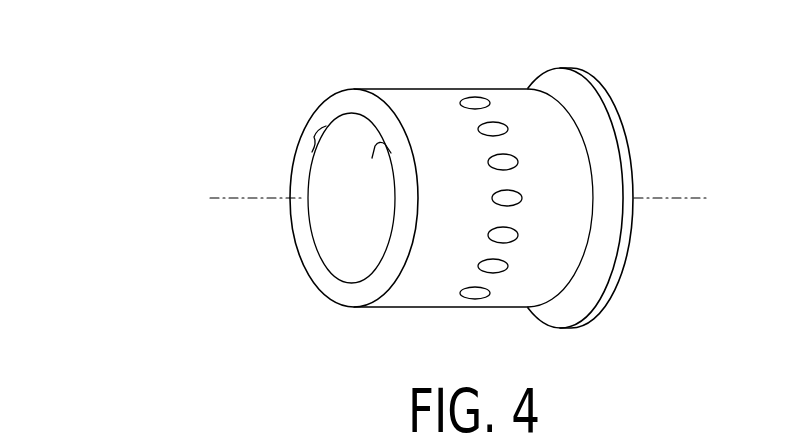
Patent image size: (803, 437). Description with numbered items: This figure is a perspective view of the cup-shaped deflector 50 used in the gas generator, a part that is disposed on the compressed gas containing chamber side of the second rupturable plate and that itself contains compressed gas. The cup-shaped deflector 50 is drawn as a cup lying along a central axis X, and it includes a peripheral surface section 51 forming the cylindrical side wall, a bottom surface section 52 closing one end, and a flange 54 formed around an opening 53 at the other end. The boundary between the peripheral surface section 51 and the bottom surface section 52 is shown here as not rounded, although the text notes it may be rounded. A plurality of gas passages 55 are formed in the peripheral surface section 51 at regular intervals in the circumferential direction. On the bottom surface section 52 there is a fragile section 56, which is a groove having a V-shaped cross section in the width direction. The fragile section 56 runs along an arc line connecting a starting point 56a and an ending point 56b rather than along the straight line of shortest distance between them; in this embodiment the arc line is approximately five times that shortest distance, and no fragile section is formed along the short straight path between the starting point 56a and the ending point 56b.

The cup-shaped deflector 50 is at (411, 83).
The peripheral surface section 51 is at (423, 290).
The bottom surface section 52 is at (317, 273).
The opening 53 is at (627, 130).
The flange 54 is at (589, 292).
The gas passages 55 is at (495, 122).
The fragile section 56 is at (313, 160).
The starting point 56a is at (320, 132).
The ending point 56b is at (373, 152).
The axis X is at (467, 201).